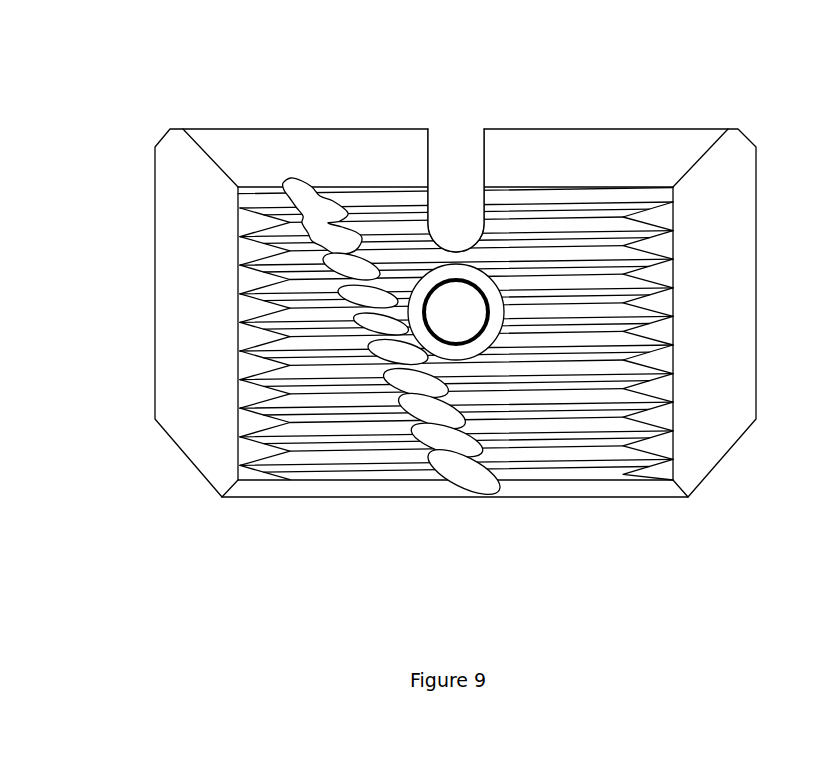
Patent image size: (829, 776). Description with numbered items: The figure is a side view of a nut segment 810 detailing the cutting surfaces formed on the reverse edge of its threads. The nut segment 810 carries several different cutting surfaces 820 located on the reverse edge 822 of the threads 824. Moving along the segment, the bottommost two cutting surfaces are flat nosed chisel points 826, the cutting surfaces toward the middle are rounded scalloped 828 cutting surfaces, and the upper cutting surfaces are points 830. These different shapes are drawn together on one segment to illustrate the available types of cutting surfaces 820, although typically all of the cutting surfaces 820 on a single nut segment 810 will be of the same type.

The nut segment 810 is at (401, 311).
The reverse edge 822 is at (202, 245).
The cutting surfaces 820 is at (360, 311).
The points 830 is at (240, 293).
The rounded scalloped cutting surfaces 828 is at (240, 381).
The flat nosed chisel points 826 is at (242, 440).
The threads 824 is at (560, 415).